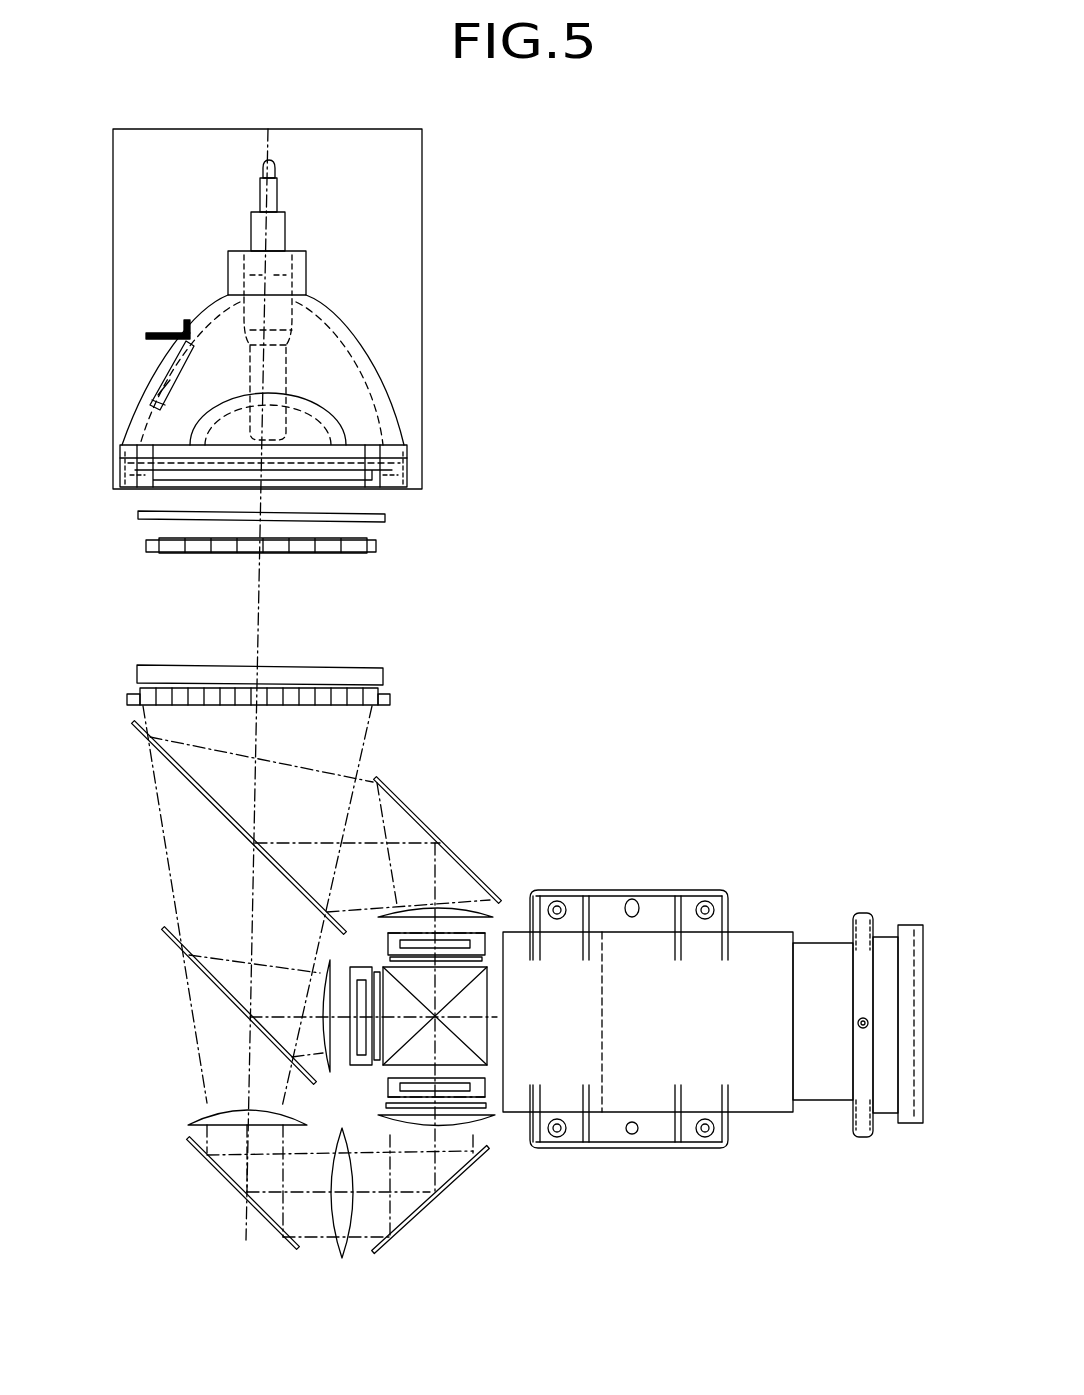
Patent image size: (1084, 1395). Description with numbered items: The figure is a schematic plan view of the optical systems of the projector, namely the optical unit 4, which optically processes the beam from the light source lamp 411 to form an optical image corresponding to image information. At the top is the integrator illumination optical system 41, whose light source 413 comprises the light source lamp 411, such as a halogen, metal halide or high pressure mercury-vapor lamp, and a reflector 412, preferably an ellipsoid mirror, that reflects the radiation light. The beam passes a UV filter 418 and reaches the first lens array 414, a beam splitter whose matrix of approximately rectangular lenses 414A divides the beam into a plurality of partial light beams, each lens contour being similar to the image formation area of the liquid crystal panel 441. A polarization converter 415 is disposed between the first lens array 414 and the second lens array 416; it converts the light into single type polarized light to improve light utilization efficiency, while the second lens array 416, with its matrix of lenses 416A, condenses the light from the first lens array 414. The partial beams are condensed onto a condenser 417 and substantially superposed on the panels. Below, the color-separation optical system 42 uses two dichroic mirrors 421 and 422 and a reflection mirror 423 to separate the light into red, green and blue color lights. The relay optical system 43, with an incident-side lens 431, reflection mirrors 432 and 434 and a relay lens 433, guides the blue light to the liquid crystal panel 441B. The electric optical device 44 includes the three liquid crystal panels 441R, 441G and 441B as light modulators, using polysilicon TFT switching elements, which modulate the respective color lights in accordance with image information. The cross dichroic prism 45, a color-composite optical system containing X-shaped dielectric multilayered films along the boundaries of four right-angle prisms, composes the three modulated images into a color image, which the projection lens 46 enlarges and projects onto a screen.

The optical unit 4 is at (630, 455).
The integrator illumination optical system 41 is at (447, 583).
The light source lamp 411 is at (283, 367).
The reflector 412 is at (373, 385).
The light source 413 is at (505, 292).
The first lens array 414 is at (302, 552).
The lens 414A is at (194, 548).
The polarization converter 415 is at (327, 673).
The second lens array 416 is at (360, 708).
The lens 416A is at (165, 692).
The condenser 417 is at (458, 903).
The UV filter 418 is at (140, 524).
The color-separation optical system 42 is at (138, 850).
The dichroic mirror 421 is at (217, 810).
The dichroic mirror 422 is at (167, 937).
The reflection mirror 423 is at (403, 807).
The relay optical system 43 is at (245, 1234).
The incident-side lens 431 is at (198, 1110).
The reflection mirror 432 is at (197, 1150).
The relay lens 433 is at (343, 1250).
The reflection mirror 434 is at (417, 1212).
The electric optical device 44 is at (494, 938).
The liquid crystal panel 441 is at (347, 1053).
The liquid crystal panel 441R is at (462, 968).
The liquid crystal panel 441G is at (342, 1050).
The liquid crystal panel 441B is at (465, 1068).
The cross dichroic prism 45 is at (475, 1010).
The projection lens 46 is at (818, 960).